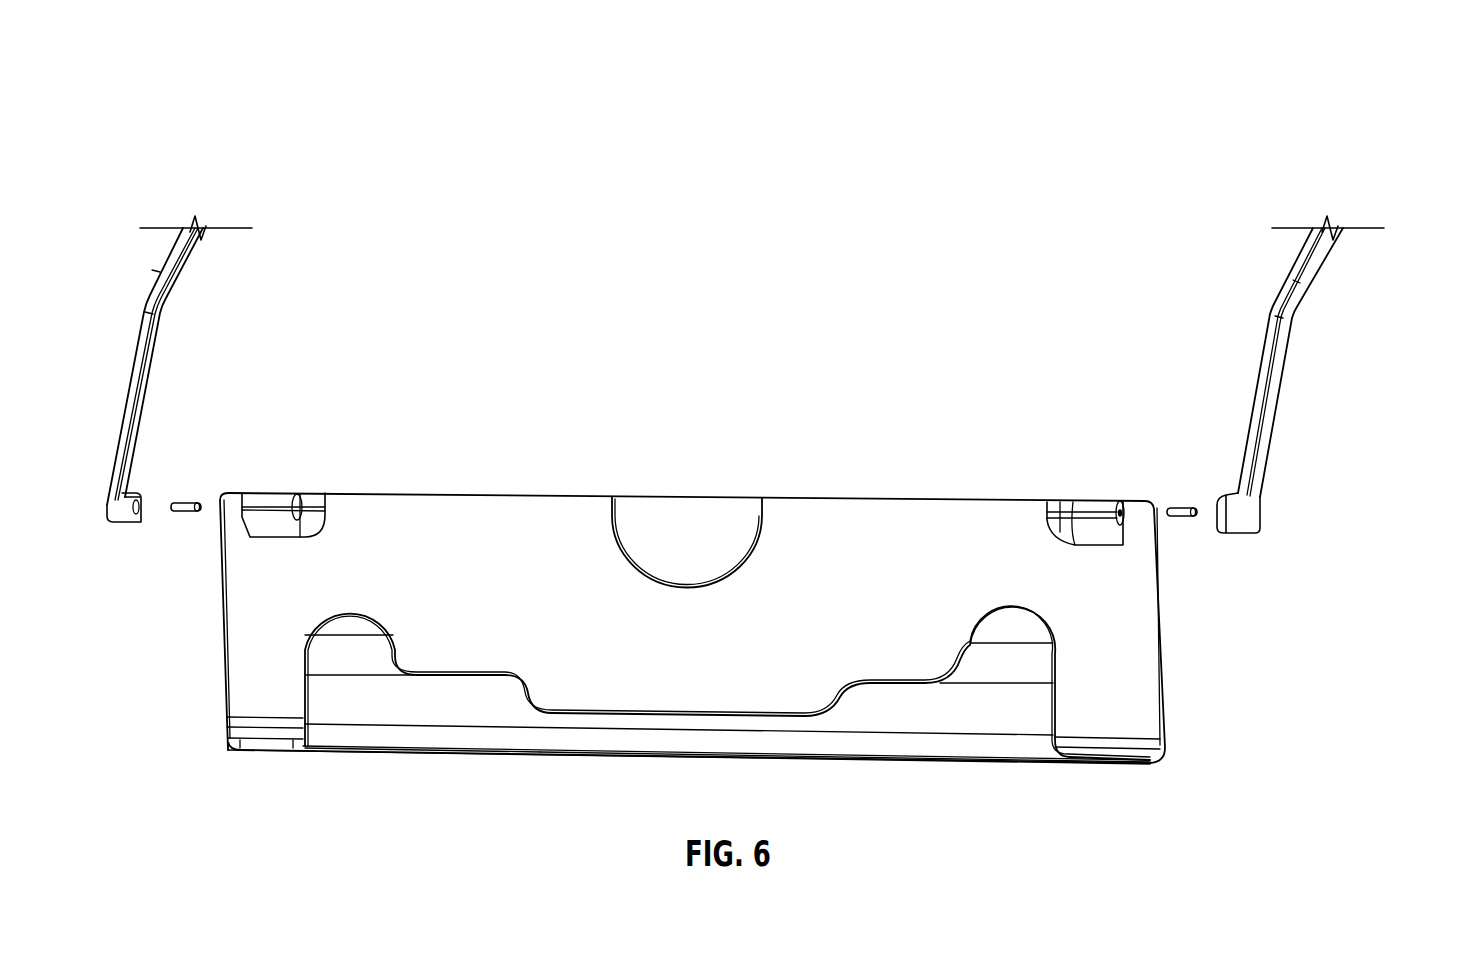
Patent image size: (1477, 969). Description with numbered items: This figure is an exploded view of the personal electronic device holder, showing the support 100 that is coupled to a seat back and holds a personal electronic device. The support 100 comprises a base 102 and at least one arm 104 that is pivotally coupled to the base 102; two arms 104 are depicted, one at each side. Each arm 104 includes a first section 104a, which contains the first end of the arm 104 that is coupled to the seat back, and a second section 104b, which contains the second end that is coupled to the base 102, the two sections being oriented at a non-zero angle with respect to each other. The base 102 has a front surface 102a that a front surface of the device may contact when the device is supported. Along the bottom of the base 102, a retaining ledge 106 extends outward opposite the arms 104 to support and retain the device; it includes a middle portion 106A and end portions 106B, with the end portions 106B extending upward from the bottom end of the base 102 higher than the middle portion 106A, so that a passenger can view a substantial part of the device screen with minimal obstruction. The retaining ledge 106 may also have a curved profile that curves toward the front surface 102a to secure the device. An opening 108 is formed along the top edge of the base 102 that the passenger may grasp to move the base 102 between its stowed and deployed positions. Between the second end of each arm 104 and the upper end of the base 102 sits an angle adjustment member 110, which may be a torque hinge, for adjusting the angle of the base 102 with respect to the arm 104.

The support 100 is at (781, 103).
The base 102 is at (1258, 637).
The front surface 102a is at (245, 652).
The arm 104 is at (255, 341).
The first section 104a is at (185, 273).
The second section 104b is at (147, 373).
The retaining ledge 106 is at (991, 830).
The middle portion 106A is at (673, 745).
The end portions 106B is at (378, 737).
The opening 108 is at (691, 500).
The angle adjustment member 110 is at (198, 502).